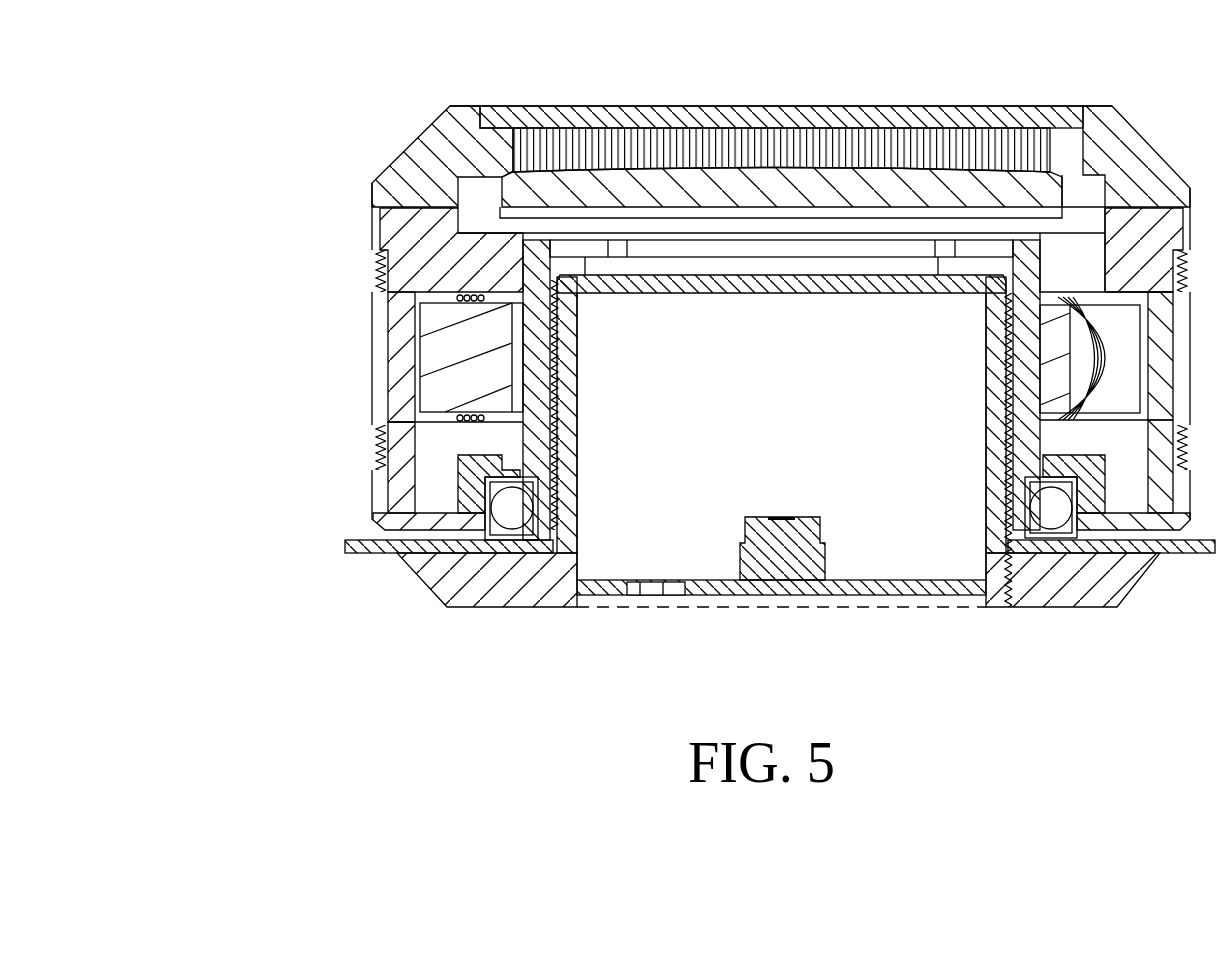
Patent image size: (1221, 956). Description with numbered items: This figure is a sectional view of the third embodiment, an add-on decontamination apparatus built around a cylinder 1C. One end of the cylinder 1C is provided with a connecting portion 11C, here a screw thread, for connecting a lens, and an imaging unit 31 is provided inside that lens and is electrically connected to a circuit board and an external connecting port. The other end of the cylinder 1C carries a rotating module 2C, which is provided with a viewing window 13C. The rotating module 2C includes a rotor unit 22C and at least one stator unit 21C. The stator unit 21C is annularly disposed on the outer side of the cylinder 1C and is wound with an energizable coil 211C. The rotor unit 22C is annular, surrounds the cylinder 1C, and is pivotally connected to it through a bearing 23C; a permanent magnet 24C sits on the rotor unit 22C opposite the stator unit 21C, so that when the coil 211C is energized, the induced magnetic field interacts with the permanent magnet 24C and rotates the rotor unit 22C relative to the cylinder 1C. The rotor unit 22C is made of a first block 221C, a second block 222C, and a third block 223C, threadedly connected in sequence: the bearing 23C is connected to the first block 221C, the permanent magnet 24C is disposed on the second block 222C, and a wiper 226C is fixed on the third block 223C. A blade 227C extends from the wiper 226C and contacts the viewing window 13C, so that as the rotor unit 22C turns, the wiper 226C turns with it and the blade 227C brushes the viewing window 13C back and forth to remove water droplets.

The cylinder 1C is at (1035, 245).
The rotating module 2C is at (185, 283).
The stator unit 21C is at (665, 311).
The coil 211C is at (485, 297).
The rotor unit 22C is at (273, 145).
The first block 221C is at (405, 452).
The second block 222C is at (382, 305).
The third block 223C is at (378, 183).
The permanent magnet 24C is at (402, 365).
The bearing 23C is at (513, 510).
The viewing window 13C is at (660, 185).
The wiper 226C is at (773, 107).
The blade 227C is at (942, 155).
The imaging unit 31 is at (822, 545).
The connecting portion 11C is at (1003, 530).